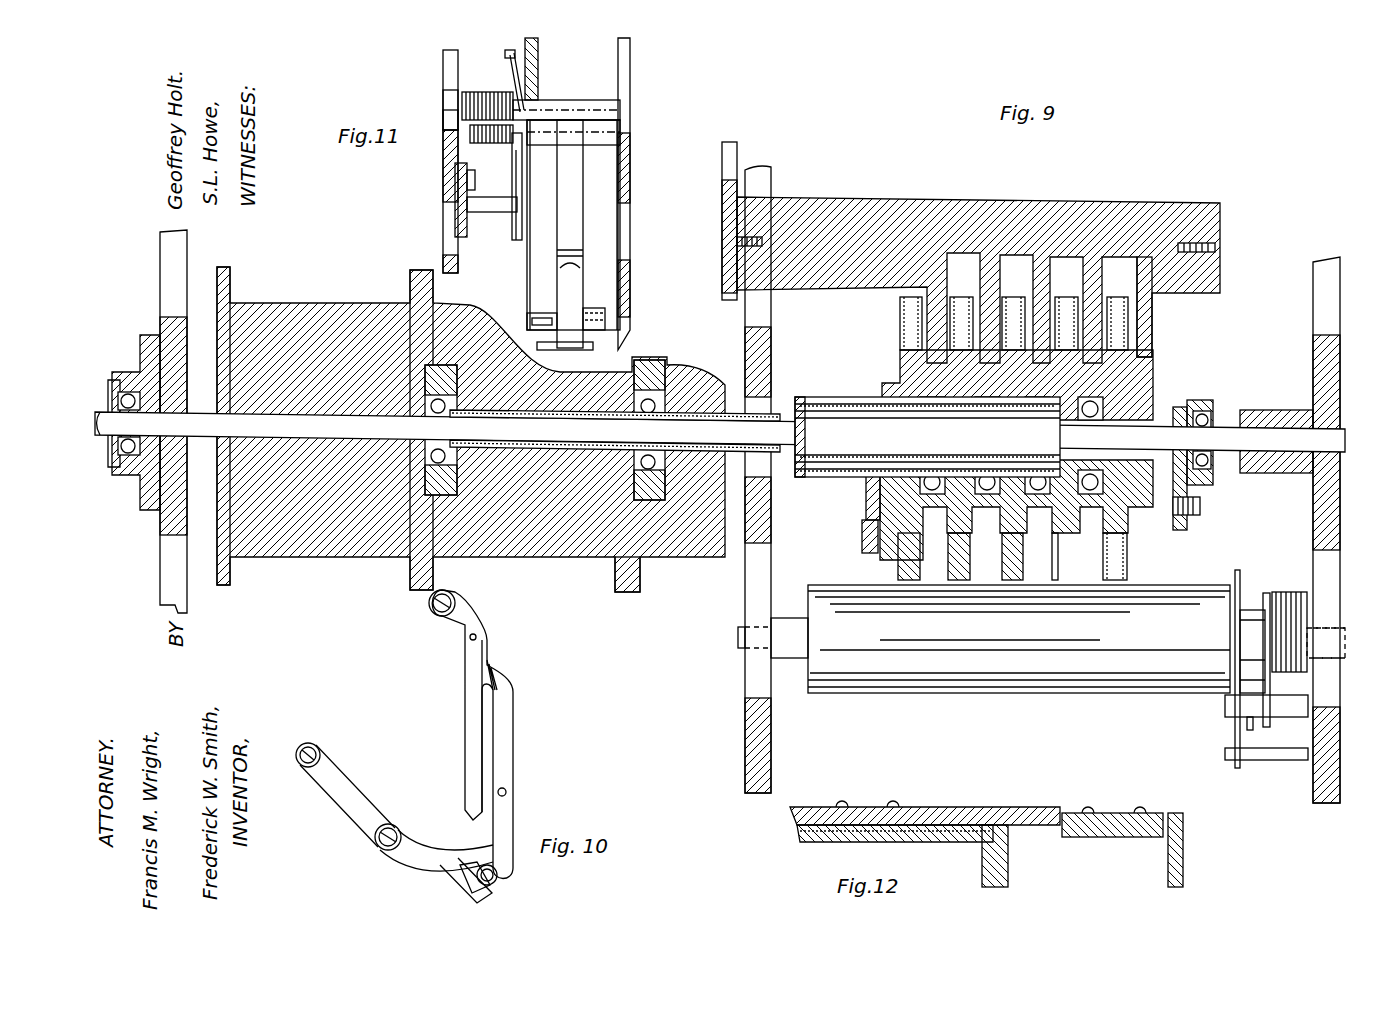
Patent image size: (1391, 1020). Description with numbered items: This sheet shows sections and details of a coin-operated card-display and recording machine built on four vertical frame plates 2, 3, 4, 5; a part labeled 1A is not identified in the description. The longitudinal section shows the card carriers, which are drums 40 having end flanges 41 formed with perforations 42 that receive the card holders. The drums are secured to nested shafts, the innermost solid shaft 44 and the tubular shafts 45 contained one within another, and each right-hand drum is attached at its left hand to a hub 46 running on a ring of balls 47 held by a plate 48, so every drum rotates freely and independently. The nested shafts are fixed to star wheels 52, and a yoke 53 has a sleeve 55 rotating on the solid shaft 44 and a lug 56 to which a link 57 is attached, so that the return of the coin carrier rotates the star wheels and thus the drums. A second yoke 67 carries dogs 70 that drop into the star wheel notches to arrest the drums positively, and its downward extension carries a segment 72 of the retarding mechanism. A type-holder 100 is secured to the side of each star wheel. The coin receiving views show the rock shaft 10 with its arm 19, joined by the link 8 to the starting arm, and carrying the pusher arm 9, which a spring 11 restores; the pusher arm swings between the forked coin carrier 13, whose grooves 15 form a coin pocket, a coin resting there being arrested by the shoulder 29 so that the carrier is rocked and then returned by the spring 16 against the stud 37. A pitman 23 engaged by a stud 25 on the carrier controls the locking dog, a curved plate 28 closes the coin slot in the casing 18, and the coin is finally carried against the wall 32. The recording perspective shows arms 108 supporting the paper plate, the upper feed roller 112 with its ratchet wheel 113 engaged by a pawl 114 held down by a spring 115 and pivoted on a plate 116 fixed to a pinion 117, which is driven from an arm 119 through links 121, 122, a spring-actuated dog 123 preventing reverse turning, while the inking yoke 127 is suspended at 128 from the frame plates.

In FIG. 11, the plate portion 1A is at (445, 118).
In FIG. 9, the frame plate 2 is at (1320, 805).
In FIG. 12, the frame plate 2 is at (1183, 862).
In FIG. 11, the frame plate 3 is at (632, 92).
In FIG. 12, the frame plate 3 is at (1008, 878).
In FIG. 9, the frame plate 4 is at (743, 785).
In FIG. 11, the frame plate 4 is at (443, 65).
In FIG. 9, the frame plate 5 is at (165, 592).
In FIG. 11, the link 8 is at (512, 235).
In FIG. 11, the pusher arm 9 is at (572, 238).
In FIG. 11, the rock shaft 10 is at (450, 108).
In FIG. 11, the spring 11 is at (478, 100).
In FIG. 11, the forked coin carrier 13 is at (600, 195).
In FIG. 11, the grooves 15 is at (532, 320).
In FIG. 11, the spring 16 is at (513, 170).
In FIG. 11, the outer casing 18 is at (508, 55).
In FIG. 11, the arm 19 is at (540, 90).
In FIG. 11, the pitman 23 is at (455, 218).
In FIG. 11, the stud 25 is at (488, 212).
In FIG. 11, the curved plate 28 is at (537, 348).
In FIG. 11, the shoulder 29 is at (565, 255).
In FIG. 12, the wall 32 is at (963, 810).
In FIG. 11, the stud 37 is at (603, 305).
In FIG. 9, the drums 40 is at (318, 303).
In FIG. 9, the flanges 41 is at (413, 578).
In FIG. 9, the perforations 42 is at (228, 288).
In FIG. 9, the innermost shaft 44 is at (100, 410).
In FIG. 9, the tubular shafts 45 is at (530, 455).
In FIG. 9, the hub 46 is at (450, 470).
In FIG. 9, the ring of balls 47 is at (648, 398).
In FIG. 9, the plate 48 is at (430, 398).
In FIG. 9, the star wheels 52 is at (1150, 535).
In FIG. 9, the yoke 53 is at (1193, 517).
In FIG. 9, the sleeve 55 is at (1205, 402).
In FIG. 9, the lug 56 is at (884, 545).
In FIG. 9, the link 57 is at (862, 538).
In FIG. 9, the yoke 67 is at (722, 228).
In FIG. 9, the dogs 70 is at (1145, 338).
In FIG. 9, the segment 72 is at (722, 150).
In FIG. 9, the type-holder 100 is at (898, 317).
In FIG. 10, the arms 108 is at (492, 885).
In FIG. 9, the upper feed roller 112 is at (1000, 639).
In FIG. 9, the ratchet wheel 113 is at (1255, 612).
In FIG. 9, the pawl 114 is at (1250, 690).
In FIG. 9, the spring 115 is at (1250, 730).
In FIG. 9, the plate 116 is at (1267, 727).
In FIG. 9, the pinion 117 is at (1300, 624).
In FIG. 10, the arm 119 is at (358, 797).
In FIG. 10, the link 121 is at (408, 858).
In FIG. 10, the link 122 is at (503, 730).
In FIG. 9, the spring actuated dog 123 is at (1245, 600).
In FIG. 10, the yoke 127 is at (470, 748).
In FIG. 10, the suspension 128 is at (440, 608).